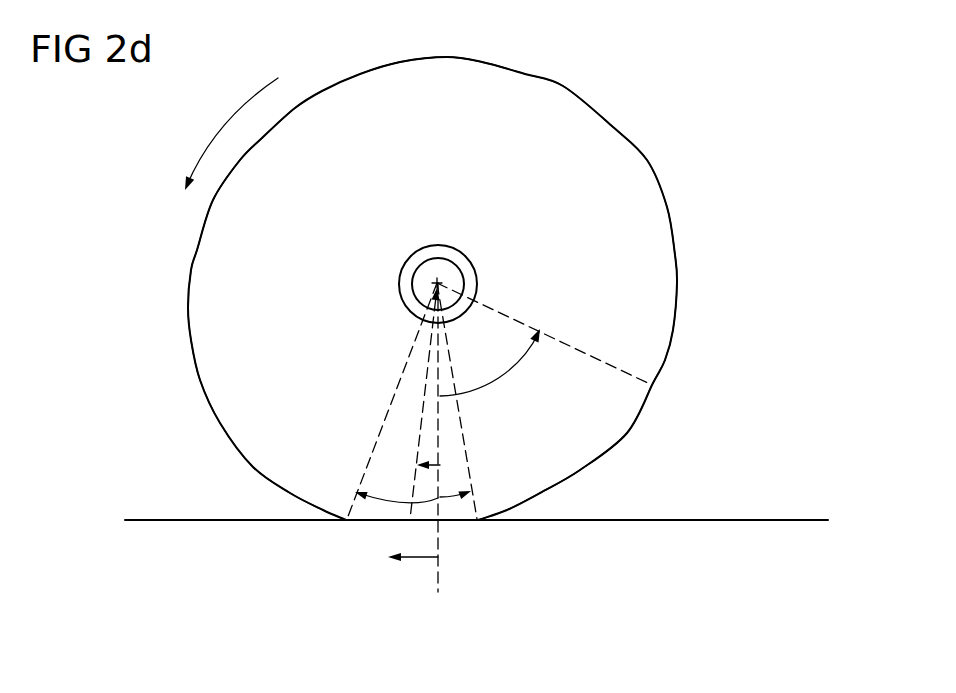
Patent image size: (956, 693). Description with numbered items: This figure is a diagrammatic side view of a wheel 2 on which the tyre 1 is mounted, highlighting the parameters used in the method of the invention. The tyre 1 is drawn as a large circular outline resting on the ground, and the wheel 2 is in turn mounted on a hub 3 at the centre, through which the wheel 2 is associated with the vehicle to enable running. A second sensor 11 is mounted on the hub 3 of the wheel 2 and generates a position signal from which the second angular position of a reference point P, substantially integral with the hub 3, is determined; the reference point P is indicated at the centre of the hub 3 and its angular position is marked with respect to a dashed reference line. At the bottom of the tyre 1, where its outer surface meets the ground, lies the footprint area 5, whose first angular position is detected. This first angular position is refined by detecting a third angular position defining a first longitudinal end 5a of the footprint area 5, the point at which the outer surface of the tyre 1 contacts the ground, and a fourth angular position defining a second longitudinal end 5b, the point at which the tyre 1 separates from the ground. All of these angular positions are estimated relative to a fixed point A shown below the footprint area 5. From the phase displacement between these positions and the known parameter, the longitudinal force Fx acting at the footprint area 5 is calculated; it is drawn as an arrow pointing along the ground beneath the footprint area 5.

The tyre 1 is at (647, 160).
The wheel 2 is at (628, 268).
The hub 3 is at (407, 255).
The second sensor 11 is at (460, 250).
The reference point P is at (473, 300).
The footprint area 5 is at (460, 526).
The first longitudinal end 5a is at (348, 522).
The second longitudinal end 5b is at (473, 520).
The fixed point A is at (442, 522).
The longitudinal force Fx is at (415, 557).